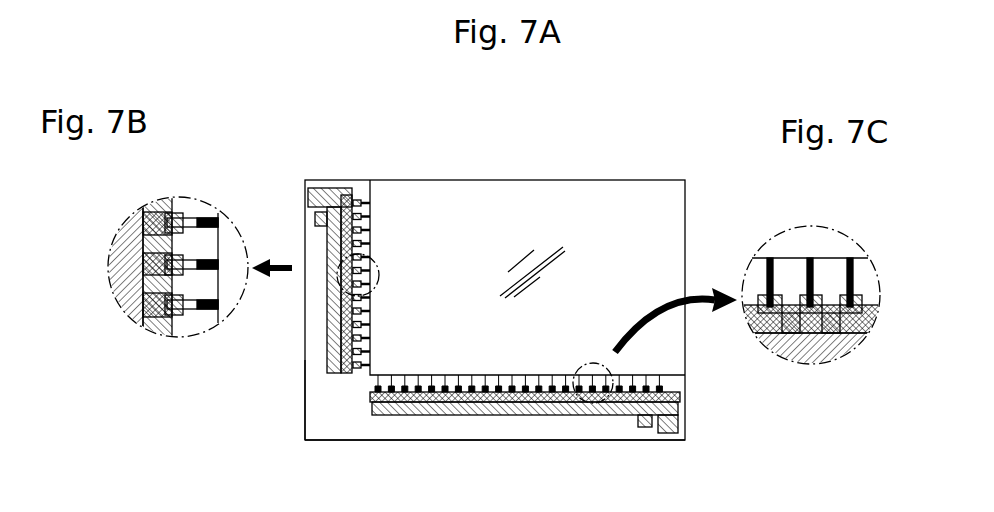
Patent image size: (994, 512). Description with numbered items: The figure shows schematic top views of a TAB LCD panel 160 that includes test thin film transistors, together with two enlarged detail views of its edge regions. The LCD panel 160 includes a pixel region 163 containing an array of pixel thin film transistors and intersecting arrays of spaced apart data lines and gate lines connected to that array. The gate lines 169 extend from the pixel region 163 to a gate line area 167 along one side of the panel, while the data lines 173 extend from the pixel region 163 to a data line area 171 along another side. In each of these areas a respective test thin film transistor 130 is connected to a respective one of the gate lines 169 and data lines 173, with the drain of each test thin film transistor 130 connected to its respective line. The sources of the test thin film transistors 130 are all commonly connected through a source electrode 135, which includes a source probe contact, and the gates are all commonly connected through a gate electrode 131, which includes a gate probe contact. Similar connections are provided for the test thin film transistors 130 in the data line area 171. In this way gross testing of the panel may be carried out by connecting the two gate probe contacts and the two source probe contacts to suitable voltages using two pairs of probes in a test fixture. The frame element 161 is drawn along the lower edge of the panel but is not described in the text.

In FIG. 7A, the test thin film transistor 130 is at (506, 304).
In FIG. 7A, the gate electrode 131 is at (352, 192).
In FIG. 7B, the gate electrode 131 is at (153, 200).
In FIG. 7C, the gate electrode 131 is at (873, 317).
In FIG. 7A, the source electrode 135 is at (315, 220).
In FIG. 7B, the source electrode 135 is at (118, 238).
In FIG. 7C, the source electrode 135 is at (810, 355).
In FIG. 7A, the LCD panel 160 is at (283, 134).
In FIG. 7A, the frame 161 is at (577, 442).
In FIG. 7A, the pixel region 163 is at (600, 197).
In FIG. 7A, the gate line area 167 is at (325, 372).
In FIG. 7B, the gate line 169 is at (203, 217).
In FIG. 7A, the data line area 171 is at (483, 430).
In FIG. 7C, the data line 173 is at (813, 270).